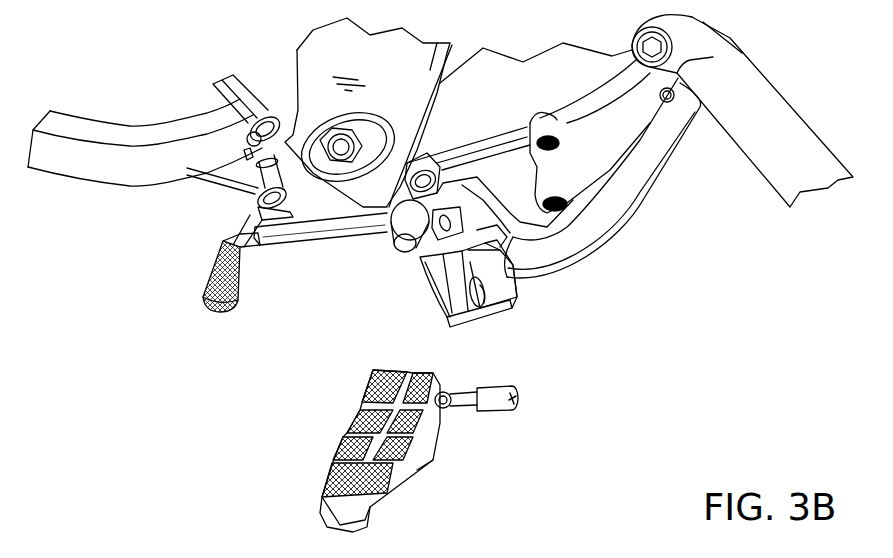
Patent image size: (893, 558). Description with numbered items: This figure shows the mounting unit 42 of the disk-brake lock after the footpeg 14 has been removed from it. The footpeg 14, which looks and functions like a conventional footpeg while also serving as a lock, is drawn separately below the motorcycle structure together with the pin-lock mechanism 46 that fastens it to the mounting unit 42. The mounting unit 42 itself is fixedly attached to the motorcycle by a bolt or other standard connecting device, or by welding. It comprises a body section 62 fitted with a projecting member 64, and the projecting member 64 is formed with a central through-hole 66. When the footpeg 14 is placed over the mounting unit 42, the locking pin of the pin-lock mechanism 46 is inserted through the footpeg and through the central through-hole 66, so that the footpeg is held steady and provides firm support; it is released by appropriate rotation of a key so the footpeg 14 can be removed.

The footpeg 14 is at (312, 433).
The mounting unit 42 is at (395, 307).
The pin-lock mechanism 46 is at (497, 405).
The body section 62 is at (512, 292).
The projecting member 64 is at (460, 293).
The central through-hole 66 is at (482, 292).